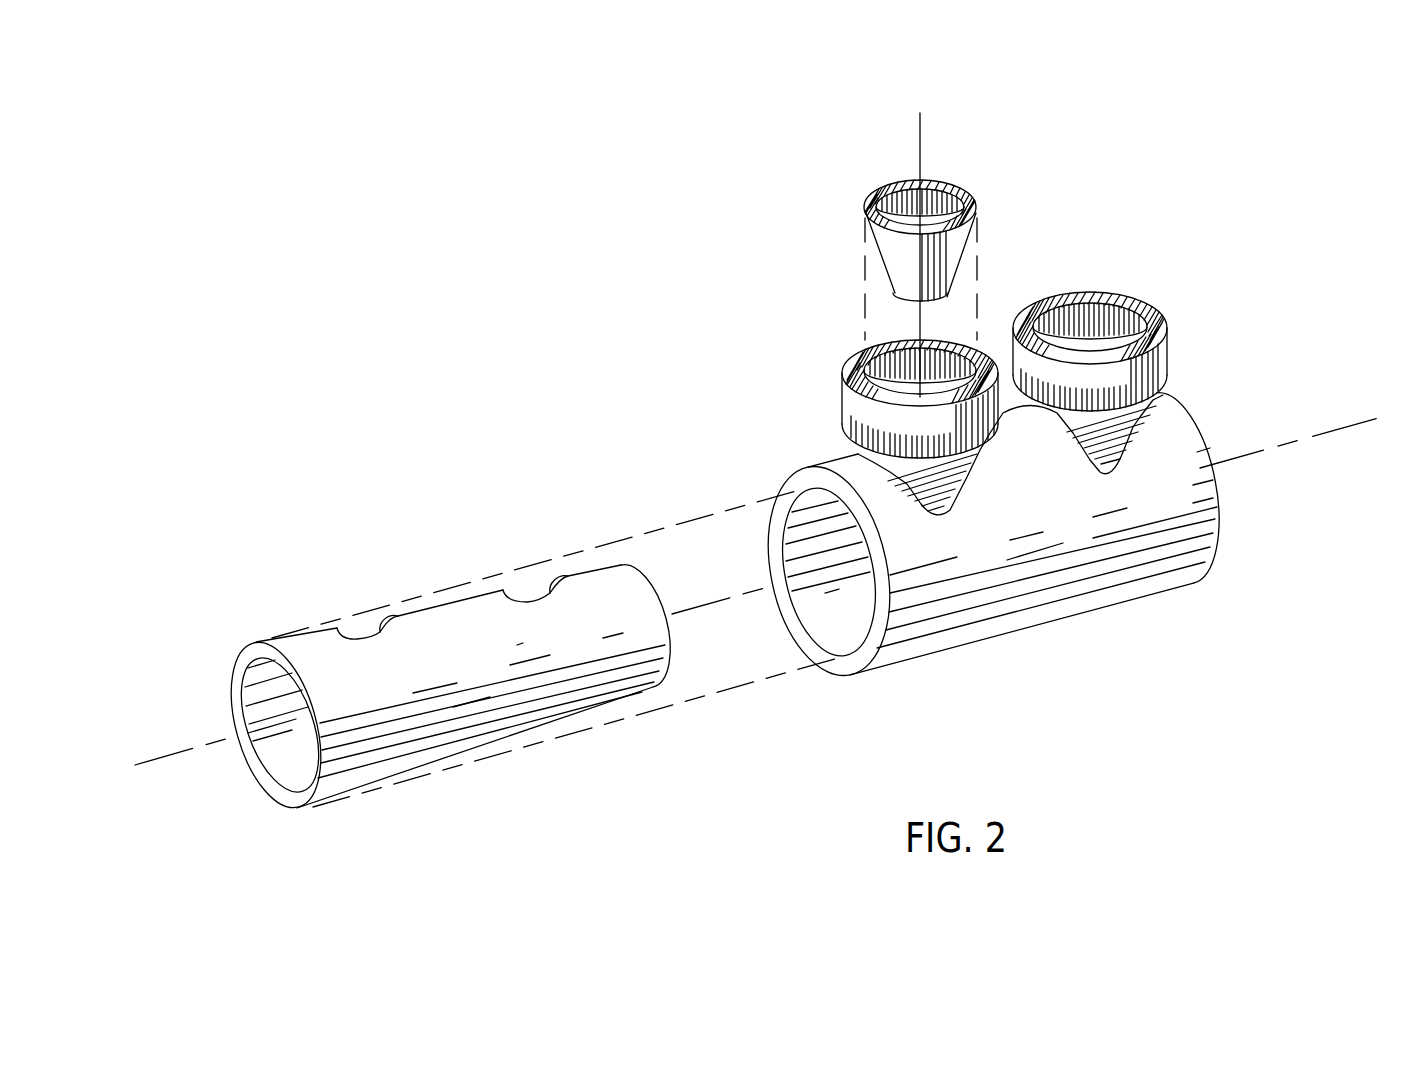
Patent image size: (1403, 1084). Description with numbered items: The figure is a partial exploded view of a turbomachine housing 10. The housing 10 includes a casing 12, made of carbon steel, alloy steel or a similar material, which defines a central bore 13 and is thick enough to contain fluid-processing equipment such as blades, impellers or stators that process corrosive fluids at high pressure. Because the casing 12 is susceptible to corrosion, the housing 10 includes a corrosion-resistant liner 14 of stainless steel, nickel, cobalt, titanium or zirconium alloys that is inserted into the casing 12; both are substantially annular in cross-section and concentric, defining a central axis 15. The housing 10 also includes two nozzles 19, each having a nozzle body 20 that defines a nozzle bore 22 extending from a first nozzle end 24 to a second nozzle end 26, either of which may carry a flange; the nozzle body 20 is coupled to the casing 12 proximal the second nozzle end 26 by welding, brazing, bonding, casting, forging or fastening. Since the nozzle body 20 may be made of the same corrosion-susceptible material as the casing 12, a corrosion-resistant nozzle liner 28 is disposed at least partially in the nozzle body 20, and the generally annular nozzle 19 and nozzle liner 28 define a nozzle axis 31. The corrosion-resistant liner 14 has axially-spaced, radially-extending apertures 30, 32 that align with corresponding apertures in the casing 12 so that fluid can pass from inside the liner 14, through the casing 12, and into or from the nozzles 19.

The turbomachine housing 10 is at (526, 376).
The casing 12 is at (1073, 612).
The central bore 13 is at (842, 633).
The corrosion-resistant liner 14 is at (515, 737).
The central axis 15 is at (157, 762).
The nozzles 19 is at (1150, 280).
The nozzle body 20 is at (853, 413).
The nozzle bore 22 is at (893, 367).
The first nozzle end 24 is at (853, 380).
The second nozzle end 26 is at (942, 510).
The corrosion-resistant nozzle liner 28 is at (872, 205).
The aperture 30 is at (383, 630).
The nozzle axis 31 is at (922, 139).
The aperture 32 is at (552, 592).